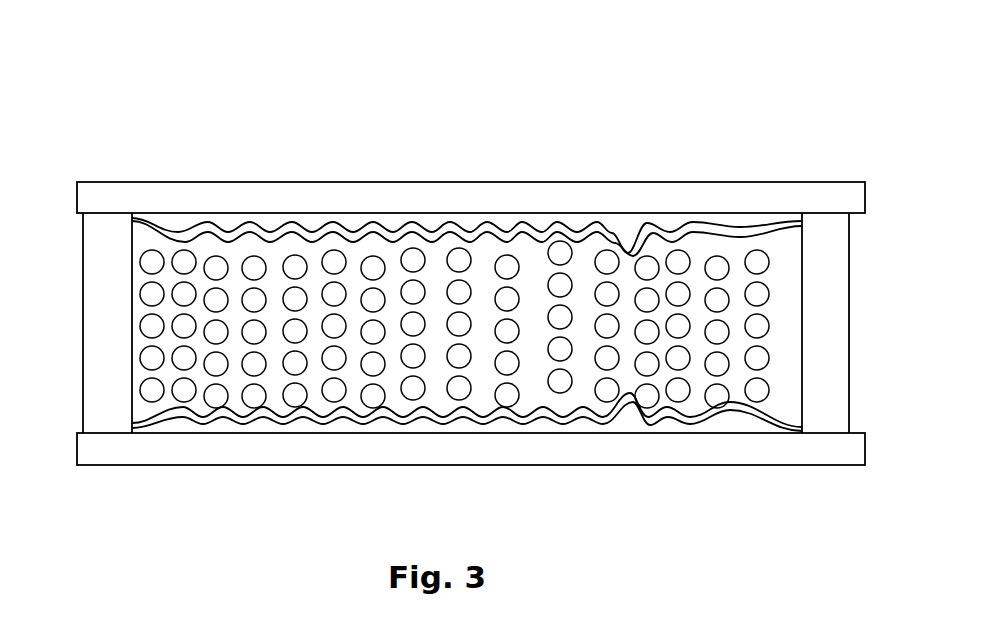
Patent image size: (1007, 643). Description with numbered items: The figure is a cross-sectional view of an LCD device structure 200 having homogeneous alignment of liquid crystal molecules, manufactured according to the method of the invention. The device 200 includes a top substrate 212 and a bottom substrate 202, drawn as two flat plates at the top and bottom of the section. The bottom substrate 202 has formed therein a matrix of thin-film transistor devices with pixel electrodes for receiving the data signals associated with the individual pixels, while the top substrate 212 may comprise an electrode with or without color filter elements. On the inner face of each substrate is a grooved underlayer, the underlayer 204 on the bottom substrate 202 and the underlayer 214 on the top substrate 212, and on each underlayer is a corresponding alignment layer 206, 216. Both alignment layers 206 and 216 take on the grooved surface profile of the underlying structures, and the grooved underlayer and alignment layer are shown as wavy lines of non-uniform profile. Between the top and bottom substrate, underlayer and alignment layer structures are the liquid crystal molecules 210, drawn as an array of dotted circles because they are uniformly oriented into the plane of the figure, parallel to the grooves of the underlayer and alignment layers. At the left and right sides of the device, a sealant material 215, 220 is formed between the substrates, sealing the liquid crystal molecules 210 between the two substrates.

The LCD device structure 200 is at (163, 76).
The bottom substrate 202 is at (237, 458).
The grooved underlayer 204 is at (390, 426).
The alignment layer 206 is at (545, 416).
The liquid crystal molecules 210 is at (785, 248).
The top substrate 212 is at (232, 193).
The grooved underlayer 214 is at (395, 220).
The alignment layer 216 is at (535, 232).
The sealant material 215 is at (88, 337).
The sealant material 220 is at (843, 255).